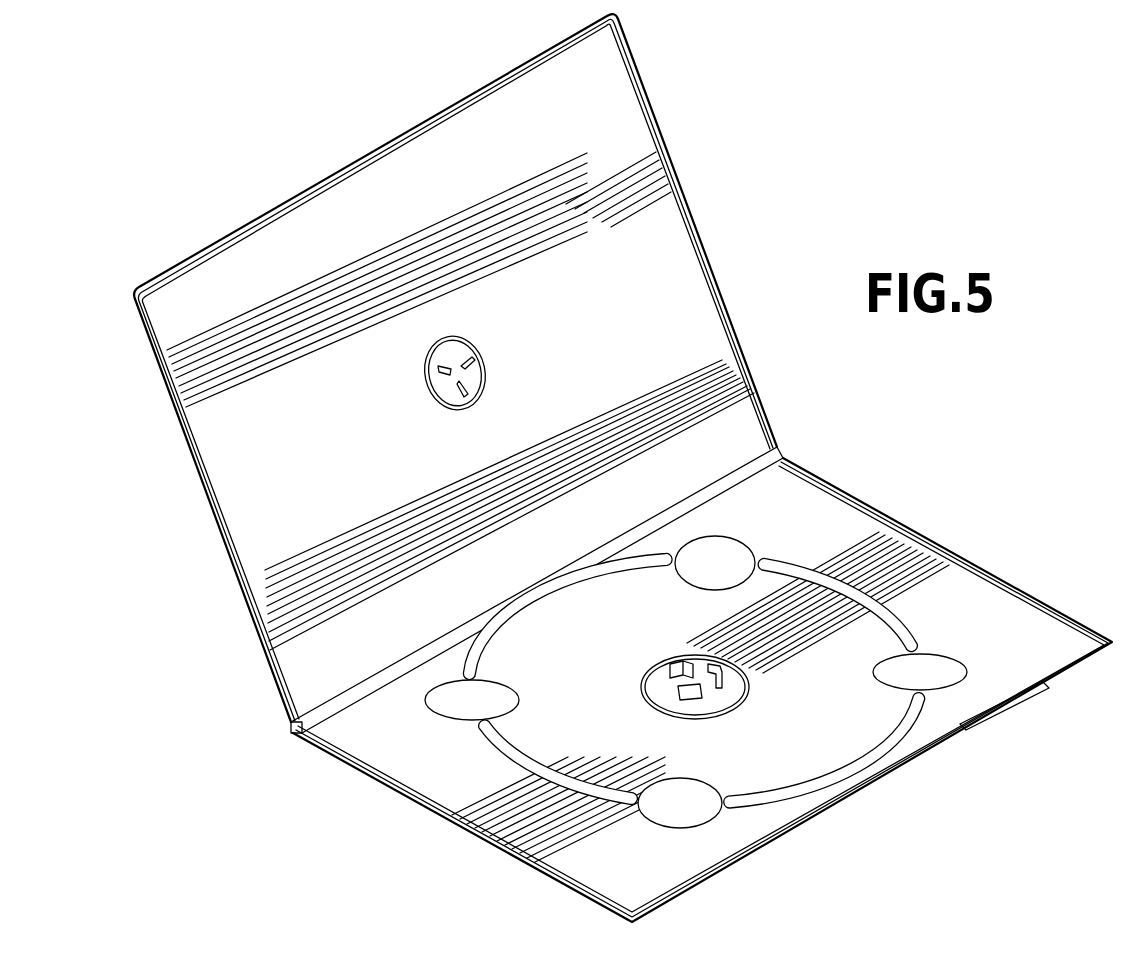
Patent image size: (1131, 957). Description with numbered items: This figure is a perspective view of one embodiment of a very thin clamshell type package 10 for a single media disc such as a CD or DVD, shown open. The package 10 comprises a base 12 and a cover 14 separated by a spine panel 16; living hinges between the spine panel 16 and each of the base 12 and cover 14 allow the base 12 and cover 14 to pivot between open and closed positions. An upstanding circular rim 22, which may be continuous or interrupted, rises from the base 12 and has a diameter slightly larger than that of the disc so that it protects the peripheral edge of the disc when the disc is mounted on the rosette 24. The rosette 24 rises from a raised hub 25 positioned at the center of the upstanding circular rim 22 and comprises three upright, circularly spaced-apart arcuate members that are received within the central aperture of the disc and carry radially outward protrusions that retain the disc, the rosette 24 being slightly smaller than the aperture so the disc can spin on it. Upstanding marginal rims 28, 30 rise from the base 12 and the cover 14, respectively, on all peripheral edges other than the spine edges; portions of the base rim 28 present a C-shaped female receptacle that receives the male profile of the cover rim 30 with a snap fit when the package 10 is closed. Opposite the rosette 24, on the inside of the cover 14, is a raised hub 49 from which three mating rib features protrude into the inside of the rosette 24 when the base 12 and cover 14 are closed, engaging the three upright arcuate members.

The package 10 is at (285, 732).
The base 12 is at (577, 868).
The cover 14 is at (257, 561).
The spine panel 16 is at (730, 467).
The upstanding circular rim 22 is at (498, 752).
The rosette 24 is at (688, 697).
The raised hub 25 is at (735, 687).
The base rim 28 is at (988, 712).
The cover rim 30 is at (201, 476).
The raised hub 49 is at (472, 375).